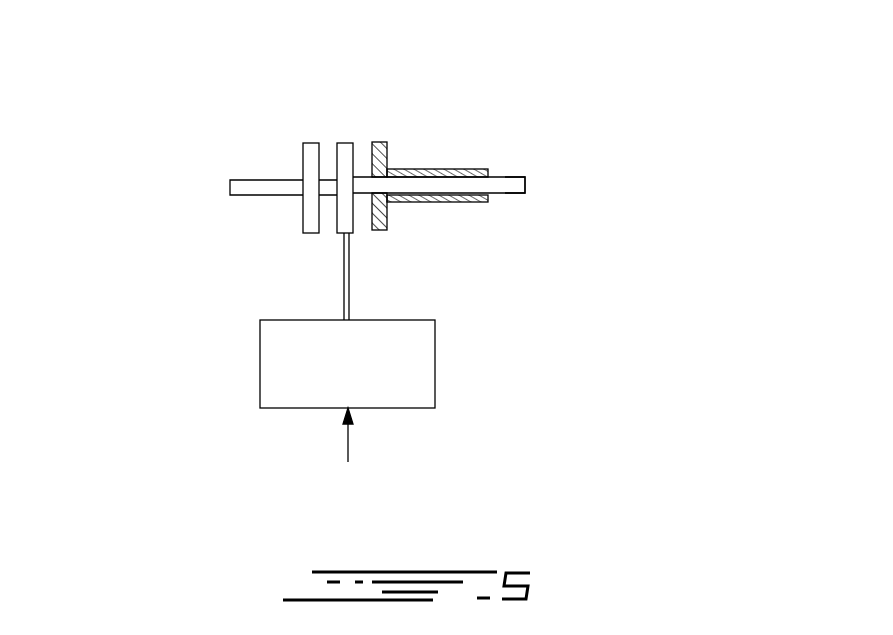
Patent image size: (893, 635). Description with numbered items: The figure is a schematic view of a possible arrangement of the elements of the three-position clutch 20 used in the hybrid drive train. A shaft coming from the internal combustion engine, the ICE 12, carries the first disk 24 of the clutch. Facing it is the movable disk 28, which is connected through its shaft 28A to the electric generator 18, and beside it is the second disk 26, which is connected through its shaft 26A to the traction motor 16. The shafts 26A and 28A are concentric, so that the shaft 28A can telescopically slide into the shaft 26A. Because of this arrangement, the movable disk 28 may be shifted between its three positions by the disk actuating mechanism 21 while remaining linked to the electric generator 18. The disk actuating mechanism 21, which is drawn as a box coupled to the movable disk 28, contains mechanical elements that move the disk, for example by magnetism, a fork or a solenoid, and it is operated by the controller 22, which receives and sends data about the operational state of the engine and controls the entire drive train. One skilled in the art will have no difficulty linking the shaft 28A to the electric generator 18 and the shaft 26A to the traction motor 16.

The ICE 12 is at (238, 190).
The traction motor 16 is at (472, 170).
The electric generator 18 is at (512, 187).
The three-position clutch 20 is at (313, 122).
The disk actuating mechanism 21 is at (427, 348).
The controller 22 is at (348, 453).
The first disk 24 is at (313, 223).
The second disk 26 is at (388, 160).
The shaft 26A is at (430, 202).
The movable disk 28 is at (348, 224).
The shaft 28A is at (457, 187).